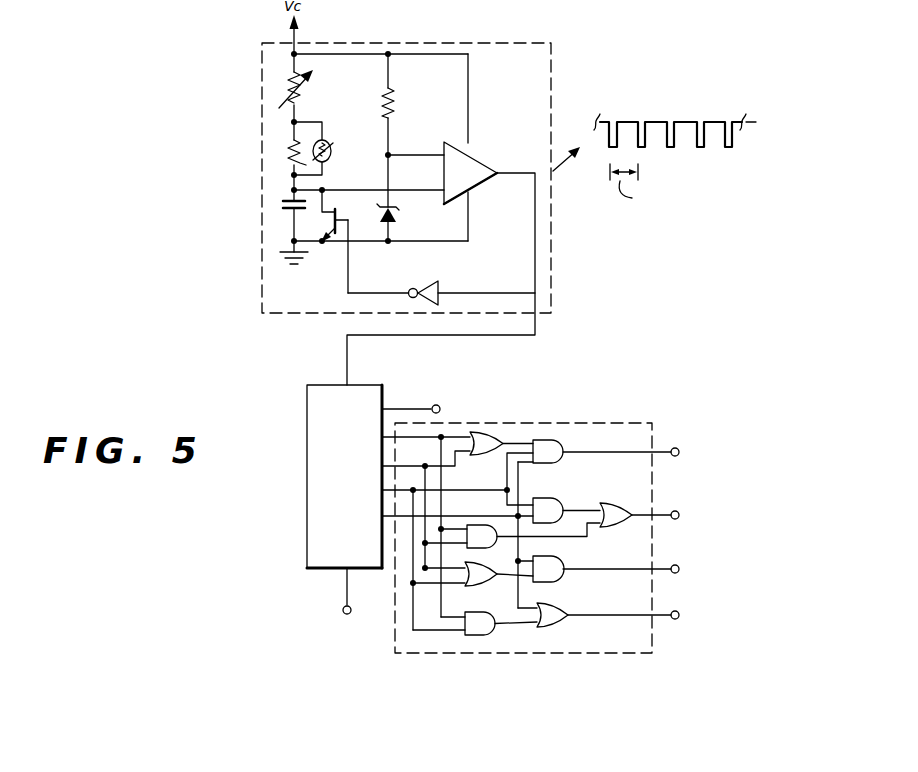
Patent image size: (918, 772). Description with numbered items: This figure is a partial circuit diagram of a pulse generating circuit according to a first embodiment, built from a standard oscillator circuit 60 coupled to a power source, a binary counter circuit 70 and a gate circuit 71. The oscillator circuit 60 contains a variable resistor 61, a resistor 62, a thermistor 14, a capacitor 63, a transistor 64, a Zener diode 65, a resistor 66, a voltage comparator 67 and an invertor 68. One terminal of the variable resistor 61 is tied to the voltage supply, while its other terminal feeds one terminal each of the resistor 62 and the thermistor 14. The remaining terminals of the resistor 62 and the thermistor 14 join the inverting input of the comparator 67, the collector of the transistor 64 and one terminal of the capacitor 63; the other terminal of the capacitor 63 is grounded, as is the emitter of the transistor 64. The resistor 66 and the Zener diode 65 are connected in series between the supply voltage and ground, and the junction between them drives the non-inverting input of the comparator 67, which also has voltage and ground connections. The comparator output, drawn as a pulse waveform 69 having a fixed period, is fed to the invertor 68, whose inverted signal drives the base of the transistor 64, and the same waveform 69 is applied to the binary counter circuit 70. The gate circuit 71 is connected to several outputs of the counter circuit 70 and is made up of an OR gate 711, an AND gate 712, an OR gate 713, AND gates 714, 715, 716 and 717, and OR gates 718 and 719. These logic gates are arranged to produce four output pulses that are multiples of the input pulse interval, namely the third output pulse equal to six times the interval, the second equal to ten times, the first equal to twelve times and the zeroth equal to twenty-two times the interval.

The thermistor 14 is at (331, 152).
The oscillator circuit 60 is at (471, 41).
The variable resistor 61 is at (290, 86).
The resistor 62 is at (290, 146).
The capacitor 63 is at (284, 204).
The transistor 64 is at (332, 222).
The Zener diode 65 is at (397, 208).
The resistor 66 is at (401, 99).
The voltage comparator 67 is at (486, 170).
The invertor 68 is at (447, 285).
The output waveform 69 is at (701, 108).
The binary counter circuit 70 is at (318, 456).
The gate circuit 71 is at (550, 424).
The OR gate 711 is at (498, 419).
The AND gate 712 is at (486, 519).
The OR gate 713 is at (474, 587).
The AND gate 714 is at (486, 636).
The AND gate 715 is at (563, 438).
The AND gate 716 is at (541, 501).
The AND gate 717 is at (561, 582).
The OR gate 718 is at (562, 626).
The OR gate 719 is at (625, 495).